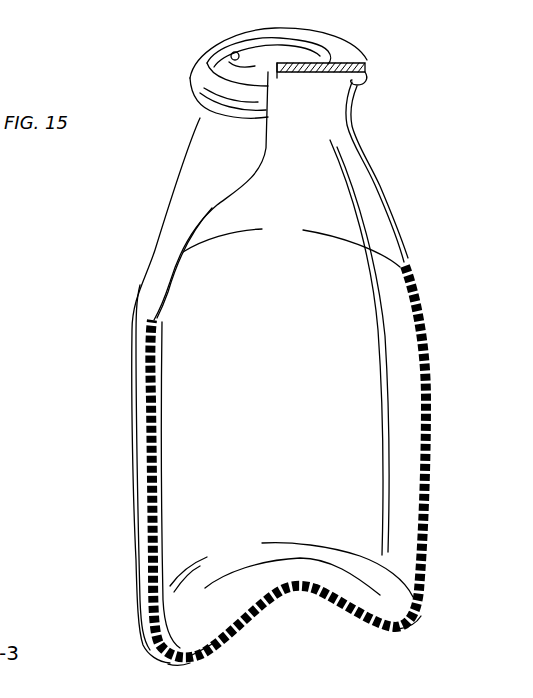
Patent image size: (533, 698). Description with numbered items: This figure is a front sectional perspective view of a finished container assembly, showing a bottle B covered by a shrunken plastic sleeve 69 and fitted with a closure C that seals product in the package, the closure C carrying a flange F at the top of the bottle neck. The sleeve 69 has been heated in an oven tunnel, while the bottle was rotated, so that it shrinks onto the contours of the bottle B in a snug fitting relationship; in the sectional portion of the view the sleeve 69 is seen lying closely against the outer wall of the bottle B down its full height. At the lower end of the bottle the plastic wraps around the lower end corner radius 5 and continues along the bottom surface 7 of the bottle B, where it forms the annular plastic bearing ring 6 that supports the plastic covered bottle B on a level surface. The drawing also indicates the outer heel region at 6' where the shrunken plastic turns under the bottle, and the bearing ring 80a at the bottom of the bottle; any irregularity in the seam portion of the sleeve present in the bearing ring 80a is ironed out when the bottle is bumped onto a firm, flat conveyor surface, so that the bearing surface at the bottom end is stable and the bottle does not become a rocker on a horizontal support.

The closure cap C is at (345, 47).
The cap flange section F is at (362, 74).
The bottle B is at (353, 168).
The sleeve 69 is at (431, 352).
The bottom surface 7 is at (240, 610).
The lower end corner radius 5 is at (183, 645).
The annular plastic bearing ring 6 is at (214, 662).
The heel outer surface 6' is at (189, 679).
The bearing ring 80a is at (413, 622).